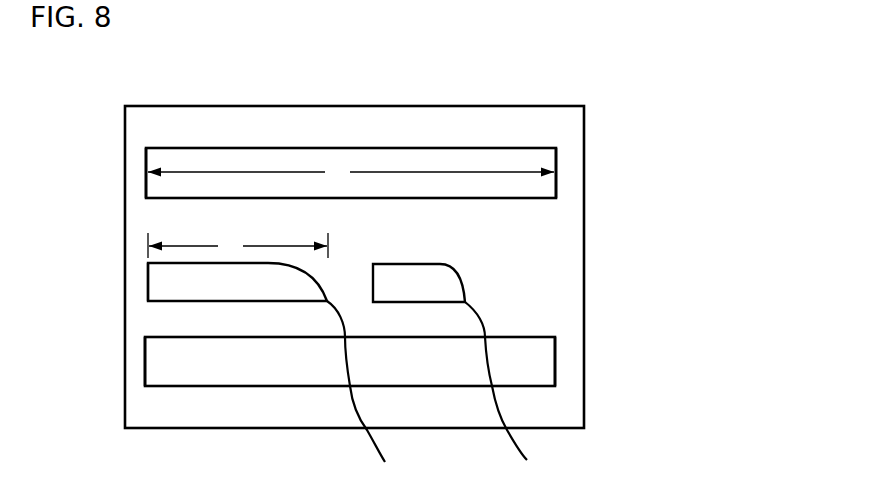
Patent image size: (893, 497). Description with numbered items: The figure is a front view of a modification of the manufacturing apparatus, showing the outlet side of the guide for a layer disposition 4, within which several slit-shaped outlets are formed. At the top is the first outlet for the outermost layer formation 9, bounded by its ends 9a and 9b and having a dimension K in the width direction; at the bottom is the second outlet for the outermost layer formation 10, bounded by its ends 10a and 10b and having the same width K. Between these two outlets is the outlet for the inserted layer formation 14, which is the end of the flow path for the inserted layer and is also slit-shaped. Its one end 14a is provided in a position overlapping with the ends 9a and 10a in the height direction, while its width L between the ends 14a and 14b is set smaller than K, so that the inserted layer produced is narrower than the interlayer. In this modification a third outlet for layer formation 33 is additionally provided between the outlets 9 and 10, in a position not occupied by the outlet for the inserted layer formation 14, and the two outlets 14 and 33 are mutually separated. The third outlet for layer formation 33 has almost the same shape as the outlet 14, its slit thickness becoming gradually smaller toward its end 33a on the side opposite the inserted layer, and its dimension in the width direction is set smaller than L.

The guide for a layer disposition 4 is at (461, 106).
The first outlet for the outermost layer formation 9 is at (349, 147).
The end of the outlet for the outermost layer formation 9a is at (147, 171).
The end of the outlet for the outermost layer formation 9b is at (556, 163).
The second outlet for the outermost layer formation 10 is at (225, 388).
The end of the outlet for the outermost layer formation 10a is at (145, 367).
The end of the outlet for the outermost layer formation 10b is at (555, 362).
The outlet for the inserted layer formation 14 is at (163, 302).
The end of the outlet for the inserted layer formation 14a is at (148, 278).
The end of the outlet for the inserted layer formation 14b is at (367, 399).
The third outlet for layer formation 33 is at (468, 271).
The end of the third outlet for layer formation 33a is at (516, 399).